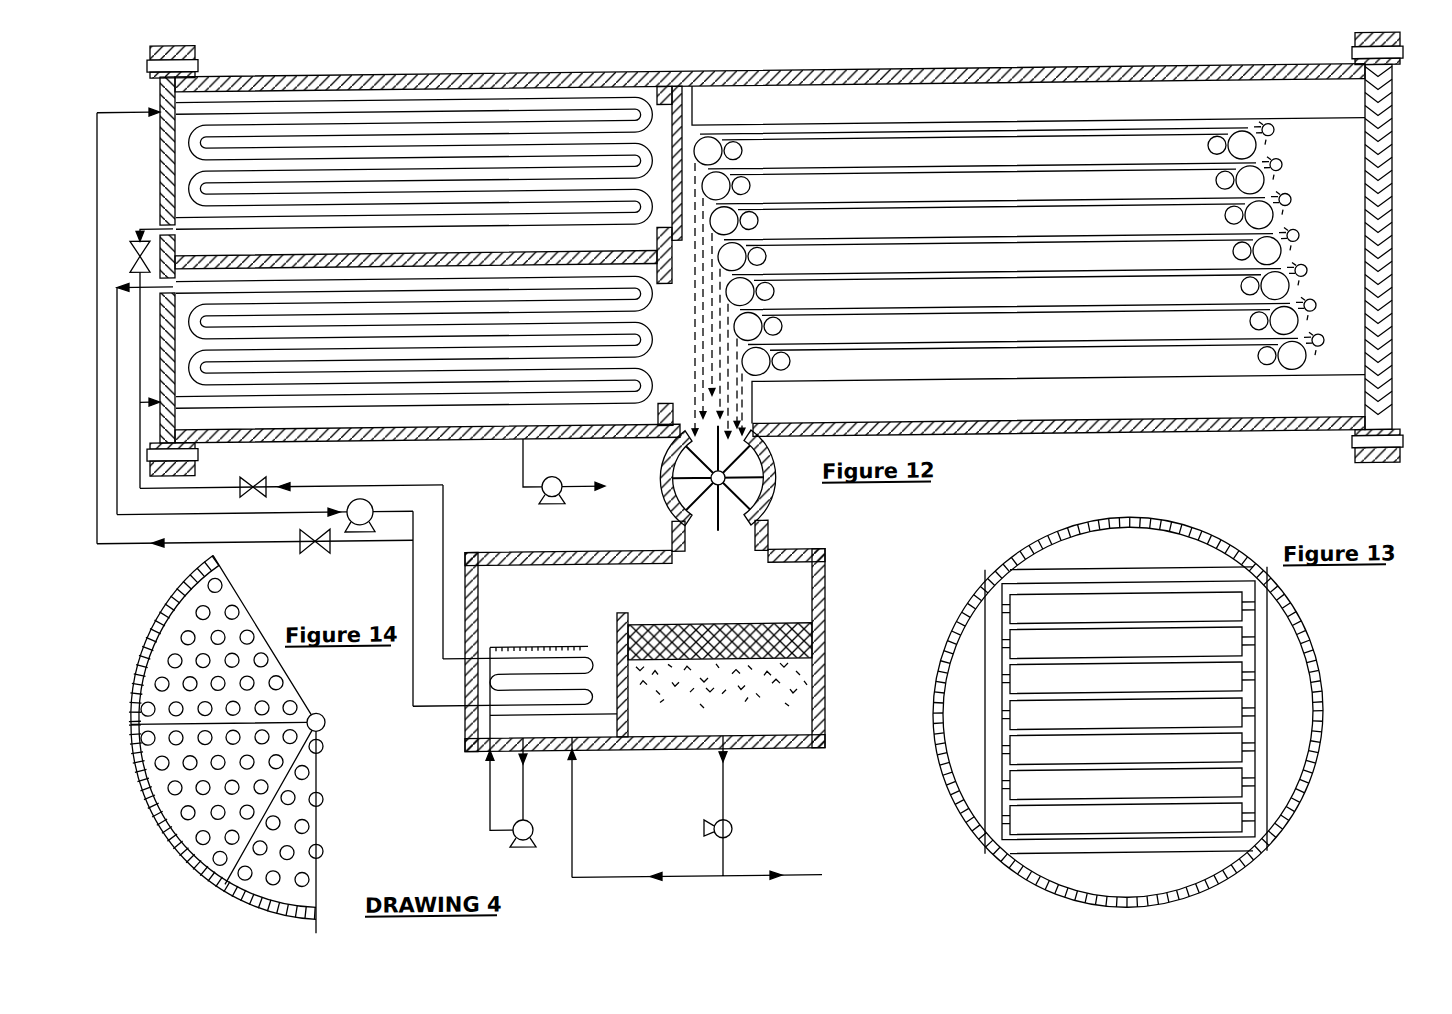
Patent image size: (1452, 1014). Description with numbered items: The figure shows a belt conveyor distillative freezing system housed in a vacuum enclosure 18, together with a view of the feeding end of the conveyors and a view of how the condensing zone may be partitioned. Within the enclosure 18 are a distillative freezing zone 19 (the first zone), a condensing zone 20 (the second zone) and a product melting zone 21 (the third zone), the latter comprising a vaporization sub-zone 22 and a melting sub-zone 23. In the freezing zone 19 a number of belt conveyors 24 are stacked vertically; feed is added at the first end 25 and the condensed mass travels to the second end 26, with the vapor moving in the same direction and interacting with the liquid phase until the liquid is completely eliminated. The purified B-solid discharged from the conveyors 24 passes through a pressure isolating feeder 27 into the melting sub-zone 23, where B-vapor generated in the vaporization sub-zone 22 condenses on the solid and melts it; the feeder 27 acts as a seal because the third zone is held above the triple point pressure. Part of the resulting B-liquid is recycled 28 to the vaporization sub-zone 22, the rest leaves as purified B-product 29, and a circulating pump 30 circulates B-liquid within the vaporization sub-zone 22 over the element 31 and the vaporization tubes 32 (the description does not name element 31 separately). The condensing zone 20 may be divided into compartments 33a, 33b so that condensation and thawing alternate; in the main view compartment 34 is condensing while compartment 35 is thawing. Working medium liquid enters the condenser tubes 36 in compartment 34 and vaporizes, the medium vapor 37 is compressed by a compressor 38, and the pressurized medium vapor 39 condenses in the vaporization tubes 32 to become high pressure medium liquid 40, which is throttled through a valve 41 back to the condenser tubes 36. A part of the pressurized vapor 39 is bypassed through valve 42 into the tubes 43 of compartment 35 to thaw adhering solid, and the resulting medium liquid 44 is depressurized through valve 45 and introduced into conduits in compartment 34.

In FIG. 12, the vacuum enclosure 18 is at (677, 96).
In FIG. 12, the distillative freezing zone 19 is at (1035, 105).
In FIG. 12, the condensing zone 20 is at (405, 103).
In FIG. 12, the product melting zone 21 is at (635, 578).
In FIG. 12, the vaporization sub-zone 22 is at (558, 612).
In FIG. 12, the melting sub-zone 23 is at (793, 607).
In FIG. 12, the belt conveyors 24 is at (1108, 181).
In FIG. 12, the first end 25 is at (1240, 140).
In FIG. 12, the second end 26 is at (712, 146).
In FIG. 12, the pressure isolating feeder 27 is at (766, 509).
In FIG. 12, the recycled B-liquid 28 is at (573, 775).
In FIG. 12, the purified B-product 29 is at (812, 880).
In FIG. 12, the circulating pump 30 is at (529, 832).
In FIG. 12, the heat exchanger coil housing 31 is at (545, 654).
In FIG. 12, the vaporization tubes 32 is at (590, 679).
In FIG. 14, the compartment 33a is at (188, 836).
In FIG. 14, the compartment 33b is at (165, 639).
In FIG. 12, the compartment 34 is at (383, 432).
In FIG. 12, the compartment 35 is at (275, 116).
In FIG. 12, the condenser tubes 36 is at (182, 402).
In FIG. 12, the medium vapor 37 is at (153, 292).
In FIG. 12, the compressor 38 is at (348, 508).
In FIG. 12, the pressurized medium vapor 39 is at (413, 534).
In FIG. 12, the high pressure medium liquid 40 is at (443, 626).
In FIG. 12, the valve 41 is at (255, 476).
In FIG. 12, the valve 42 is at (315, 551).
In FIG. 12, the tubes 43 is at (128, 326).
In FIG. 12, the medium liquid 44 is at (149, 224).
In FIG. 12, the valve 45 is at (130, 258).